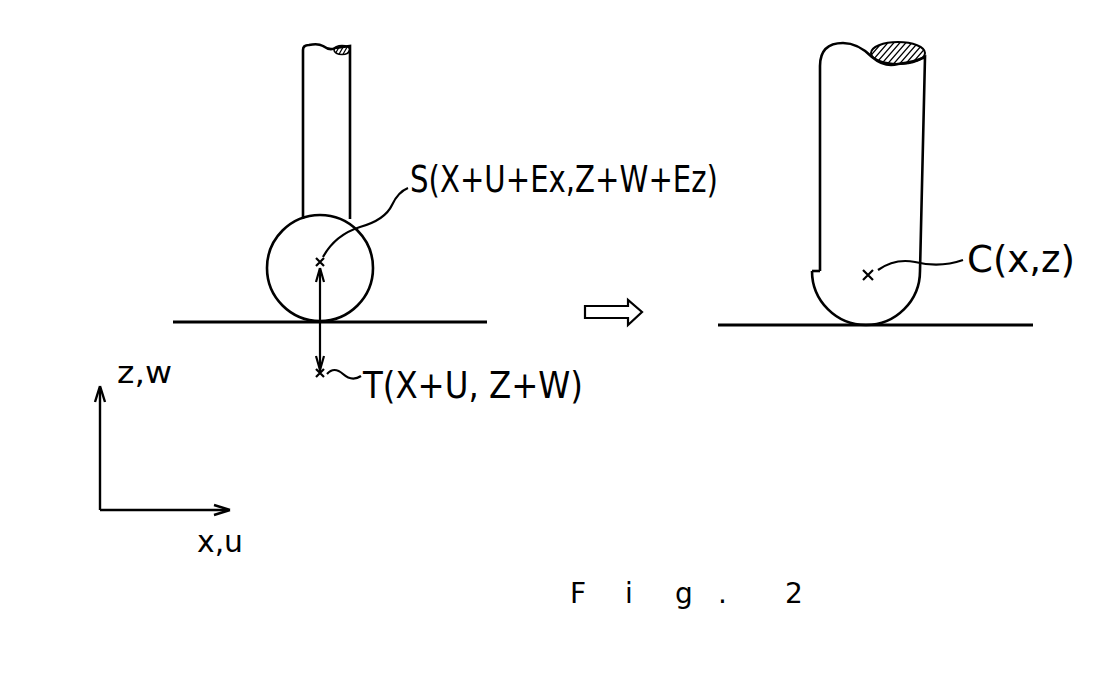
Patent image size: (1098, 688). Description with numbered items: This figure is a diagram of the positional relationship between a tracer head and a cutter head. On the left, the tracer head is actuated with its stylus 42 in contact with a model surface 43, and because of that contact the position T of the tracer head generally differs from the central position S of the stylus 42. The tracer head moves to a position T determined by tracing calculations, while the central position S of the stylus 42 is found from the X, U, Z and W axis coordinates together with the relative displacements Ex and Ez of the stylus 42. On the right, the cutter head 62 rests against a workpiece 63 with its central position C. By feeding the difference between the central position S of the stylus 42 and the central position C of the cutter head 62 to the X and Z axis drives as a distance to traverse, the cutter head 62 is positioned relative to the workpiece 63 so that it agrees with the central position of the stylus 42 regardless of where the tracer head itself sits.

The stylus 42 is at (280, 235).
The model surface 43 is at (200, 321).
The cutter head 62 is at (926, 198).
The workpiece 63 is at (745, 324).